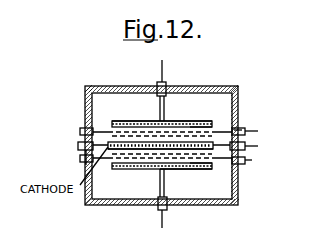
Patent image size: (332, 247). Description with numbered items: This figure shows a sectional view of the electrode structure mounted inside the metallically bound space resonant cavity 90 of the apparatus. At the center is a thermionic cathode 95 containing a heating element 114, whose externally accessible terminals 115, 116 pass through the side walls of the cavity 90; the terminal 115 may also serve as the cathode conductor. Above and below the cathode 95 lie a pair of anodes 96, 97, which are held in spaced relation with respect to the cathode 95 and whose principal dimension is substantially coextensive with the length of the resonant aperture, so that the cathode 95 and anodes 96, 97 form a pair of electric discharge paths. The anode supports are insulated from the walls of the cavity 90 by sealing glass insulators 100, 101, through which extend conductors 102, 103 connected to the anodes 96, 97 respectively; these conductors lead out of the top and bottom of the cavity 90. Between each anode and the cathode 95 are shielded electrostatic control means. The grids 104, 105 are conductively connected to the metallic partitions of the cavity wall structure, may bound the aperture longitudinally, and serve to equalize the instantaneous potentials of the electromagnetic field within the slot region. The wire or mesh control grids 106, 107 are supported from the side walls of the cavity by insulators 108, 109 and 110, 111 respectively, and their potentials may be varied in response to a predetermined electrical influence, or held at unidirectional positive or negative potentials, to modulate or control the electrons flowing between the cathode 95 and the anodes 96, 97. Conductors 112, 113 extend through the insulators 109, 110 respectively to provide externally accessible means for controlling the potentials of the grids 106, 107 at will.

The resonant cavity 90 is at (117, 86).
The sealing glass insulator 100 is at (166, 86).
The conductor 102 is at (165, 62).
The sealing glass insulator 101 is at (166, 222).
The conductor 103 is at (160, 226).
The grid 104 is at (183, 121).
The wire or mesh grid 106 is at (135, 121).
The anode 96 is at (207, 121).
The wire or mesh grid 107 is at (134, 169).
The grid 105 is at (190, 169).
The anode 97 is at (208, 169).
The heating element 114 is at (108, 141).
The thermionic cathode 95 is at (112, 163).
The insulator 108 is at (81, 128).
The terminal 115 is at (78, 144).
The conductor 113 is at (79, 159).
The insulator 110 is at (80, 160).
The conductor 112 is at (258, 131).
The insulator 109 is at (242, 128).
The terminal 116 is at (258, 146).
The insulator 111 is at (246, 161).